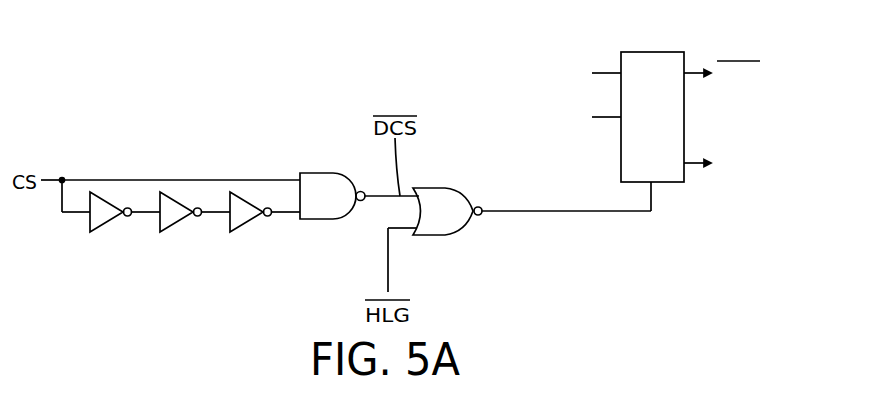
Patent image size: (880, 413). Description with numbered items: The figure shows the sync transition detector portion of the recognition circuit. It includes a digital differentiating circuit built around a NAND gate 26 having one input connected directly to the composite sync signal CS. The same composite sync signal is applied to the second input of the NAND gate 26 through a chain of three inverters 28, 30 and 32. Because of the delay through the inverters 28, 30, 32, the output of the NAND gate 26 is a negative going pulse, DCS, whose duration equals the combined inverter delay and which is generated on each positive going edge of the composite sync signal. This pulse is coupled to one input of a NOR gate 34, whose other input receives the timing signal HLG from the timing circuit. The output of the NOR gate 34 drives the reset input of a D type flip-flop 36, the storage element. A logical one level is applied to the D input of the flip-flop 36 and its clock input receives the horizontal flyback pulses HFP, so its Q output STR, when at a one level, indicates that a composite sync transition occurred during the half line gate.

The NAND gate 26 is at (320, 172).
The inverter 28 is at (117, 218).
The inverter 30 is at (180, 218).
The inverter 32 is at (254, 218).
The NOR gate 34 is at (448, 188).
The D type flip-flop 36 is at (652, 52).